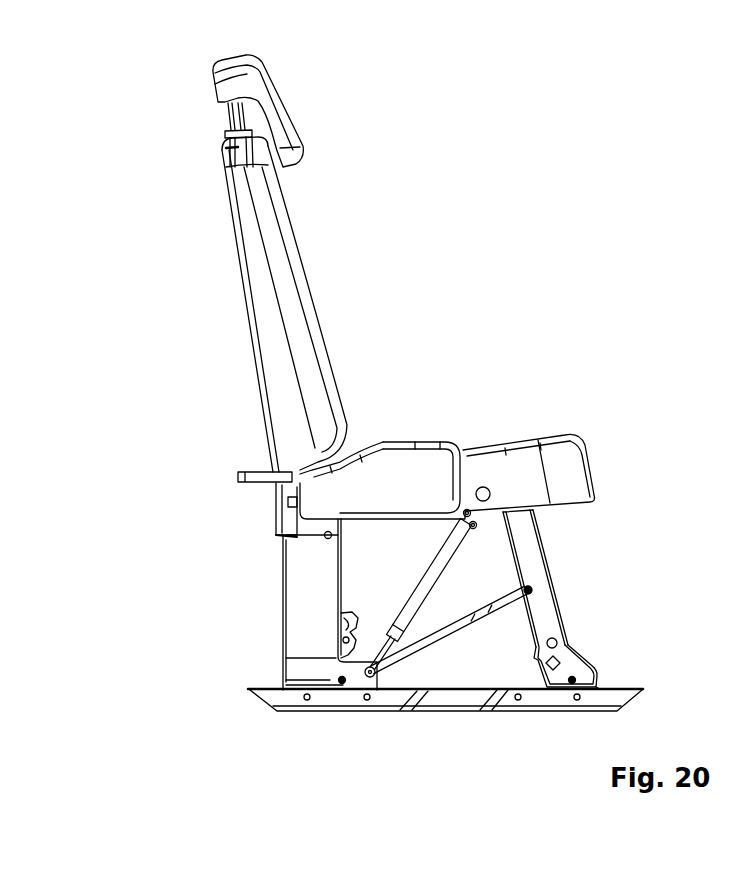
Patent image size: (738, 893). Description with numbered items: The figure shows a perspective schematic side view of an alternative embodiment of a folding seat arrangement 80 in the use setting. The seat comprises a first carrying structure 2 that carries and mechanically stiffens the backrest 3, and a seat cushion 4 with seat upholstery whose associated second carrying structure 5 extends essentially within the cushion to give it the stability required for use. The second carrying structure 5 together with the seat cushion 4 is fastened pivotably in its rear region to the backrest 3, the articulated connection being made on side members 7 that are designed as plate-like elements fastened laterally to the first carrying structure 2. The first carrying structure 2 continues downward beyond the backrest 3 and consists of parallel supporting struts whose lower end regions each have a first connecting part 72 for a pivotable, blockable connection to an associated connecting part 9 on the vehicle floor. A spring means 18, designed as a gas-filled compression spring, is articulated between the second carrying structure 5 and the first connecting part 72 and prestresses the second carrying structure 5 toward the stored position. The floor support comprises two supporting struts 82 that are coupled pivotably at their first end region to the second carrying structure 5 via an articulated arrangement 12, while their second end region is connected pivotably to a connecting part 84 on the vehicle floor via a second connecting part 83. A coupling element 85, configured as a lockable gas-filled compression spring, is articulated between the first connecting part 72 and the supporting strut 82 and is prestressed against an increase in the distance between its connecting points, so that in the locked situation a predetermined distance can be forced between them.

The folding seat arrangement 80 is at (523, 161).
The backrest 3 is at (253, 257).
The side members 7 is at (378, 482).
The articulated arrangement 12 is at (483, 487).
The second carrying structure 5 is at (515, 453).
The seat cushion 4 is at (560, 463).
The spring means 18 is at (423, 580).
The first carrying structure 2 is at (290, 587).
The first connecting part 72 is at (300, 672).
The connecting part on the vehicle floor 9 is at (295, 700).
The coupling element 85 is at (513, 588).
The supporting struts 82 is at (542, 612).
The second connecting part 83 is at (577, 670).
The connecting part on the vehicle floor 84 is at (580, 700).